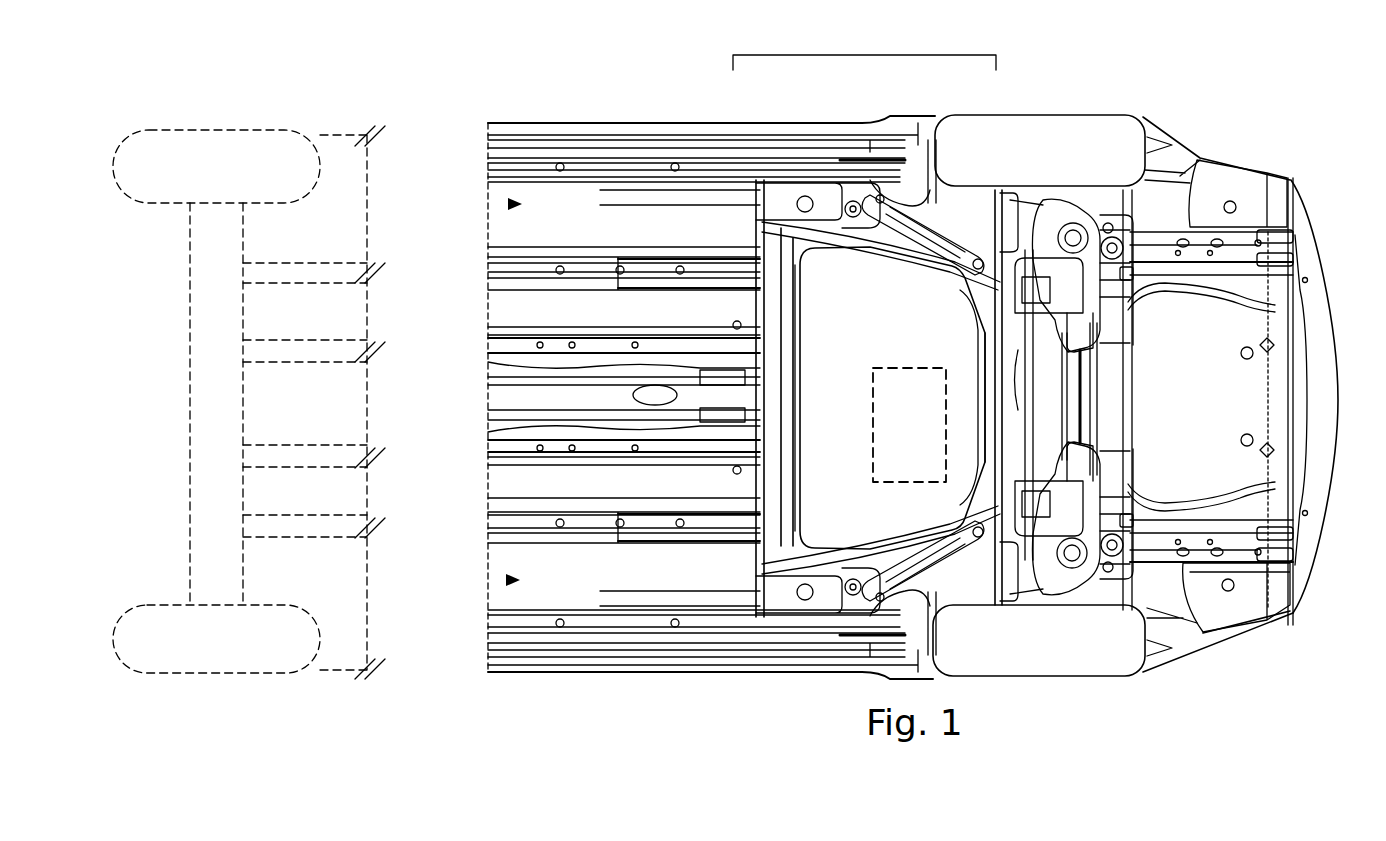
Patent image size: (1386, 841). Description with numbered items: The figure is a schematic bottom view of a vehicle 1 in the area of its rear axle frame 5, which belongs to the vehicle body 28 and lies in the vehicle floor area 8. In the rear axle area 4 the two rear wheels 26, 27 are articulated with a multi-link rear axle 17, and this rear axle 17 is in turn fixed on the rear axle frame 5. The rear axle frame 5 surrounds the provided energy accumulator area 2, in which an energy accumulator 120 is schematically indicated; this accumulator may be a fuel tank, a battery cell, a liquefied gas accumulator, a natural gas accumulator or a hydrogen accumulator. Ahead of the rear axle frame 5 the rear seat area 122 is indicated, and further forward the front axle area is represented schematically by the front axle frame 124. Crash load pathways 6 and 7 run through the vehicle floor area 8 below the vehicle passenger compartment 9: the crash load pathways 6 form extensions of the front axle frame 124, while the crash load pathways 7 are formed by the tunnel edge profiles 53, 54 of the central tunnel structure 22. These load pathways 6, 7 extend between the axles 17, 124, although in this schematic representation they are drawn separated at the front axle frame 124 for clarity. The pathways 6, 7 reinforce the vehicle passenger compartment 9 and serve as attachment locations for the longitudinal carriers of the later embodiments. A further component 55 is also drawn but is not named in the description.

The vehicle 1 is at (1325, 145).
The energy accumulator area 2 is at (852, 419).
The rear axle area 4 is at (1052, 436).
The rear axle frame 5 is at (850, 190).
The crash load pathways 6 is at (290, 263).
The crash load pathways 7 is at (285, 340).
The vehicle floor area 8 is at (597, 194).
The vehicle passenger compartment 9 is at (510, 204).
The rear axle 17 is at (1097, 366).
The central tunnel structure 22 is at (510, 392).
The rear wheel 26 is at (1094, 148).
The rear wheel 27 is at (1057, 657).
The vehicle body 28 is at (500, 154).
The tunnel edge profile 53 is at (557, 337).
The tunnel edge profile 54 is at (553, 447).
The tunnel 55 is at (920, 268).
The energy accumulator 120 is at (900, 368).
The rear seat area 122 is at (872, 55).
The front axle frame 124 is at (243, 590).